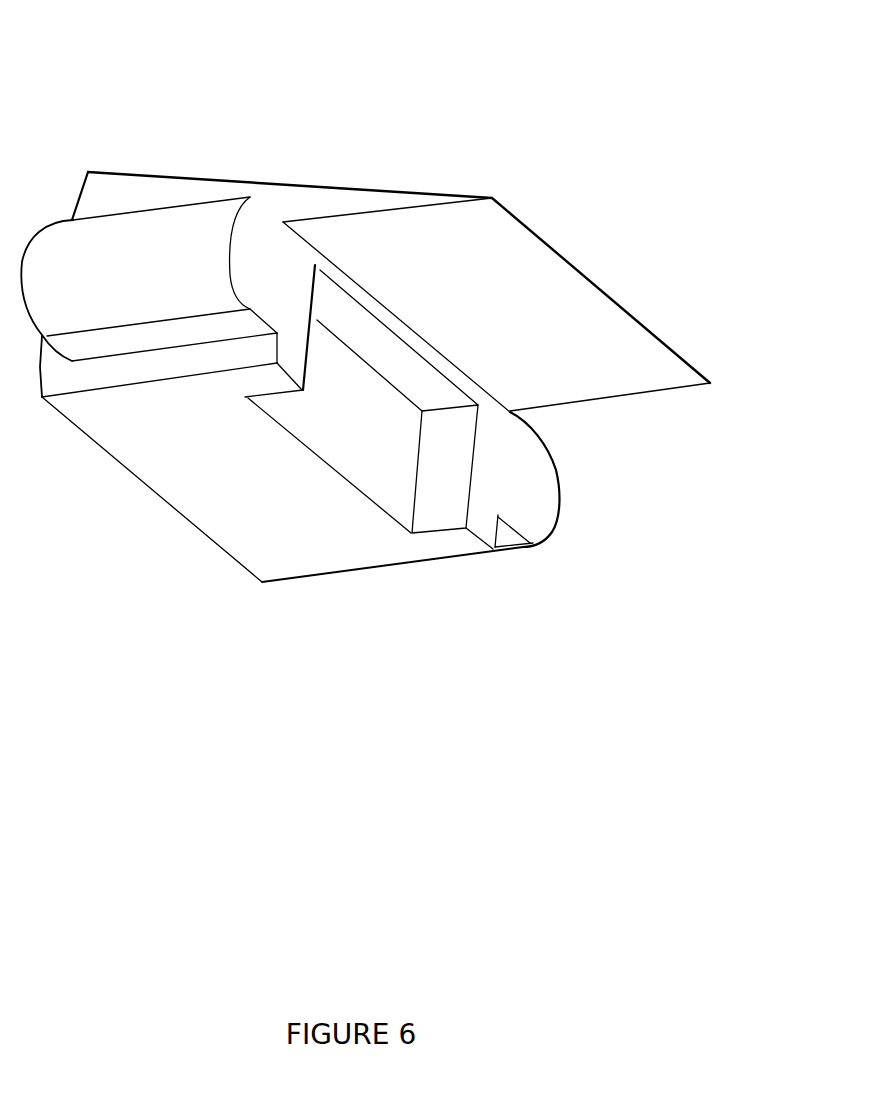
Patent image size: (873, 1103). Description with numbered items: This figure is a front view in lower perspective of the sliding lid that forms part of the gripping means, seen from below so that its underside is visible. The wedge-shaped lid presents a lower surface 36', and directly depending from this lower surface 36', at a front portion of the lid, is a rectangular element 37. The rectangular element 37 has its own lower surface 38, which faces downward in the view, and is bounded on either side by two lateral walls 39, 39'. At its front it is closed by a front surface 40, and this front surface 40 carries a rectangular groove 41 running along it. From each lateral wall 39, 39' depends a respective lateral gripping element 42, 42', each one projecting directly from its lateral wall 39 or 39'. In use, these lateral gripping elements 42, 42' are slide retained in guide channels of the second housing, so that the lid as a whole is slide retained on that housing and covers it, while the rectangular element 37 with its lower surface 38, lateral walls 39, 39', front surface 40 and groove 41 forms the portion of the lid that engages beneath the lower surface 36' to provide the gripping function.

The lower surface 36' is at (391, 385).
The rectangular element 37 is at (185, 502).
The lower surface 38 is at (297, 505).
The lateral wall 39 is at (160, 430).
The lateral wall 39' is at (521, 624).
The front surface 40 is at (295, 313).
The rectangular groove 41 is at (355, 432).
The lateral gripping element 42 is at (149, 188).
The lateral gripping element 42' is at (491, 497).